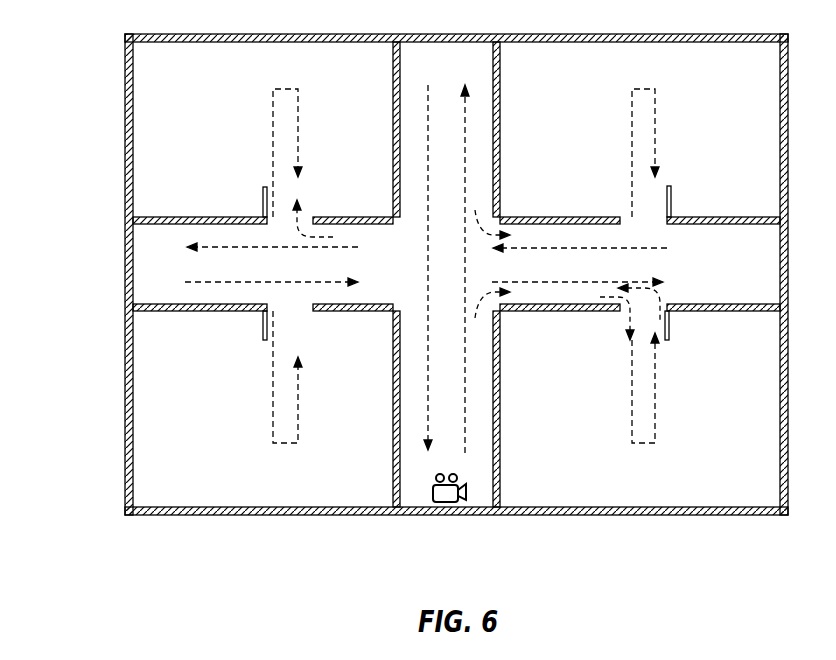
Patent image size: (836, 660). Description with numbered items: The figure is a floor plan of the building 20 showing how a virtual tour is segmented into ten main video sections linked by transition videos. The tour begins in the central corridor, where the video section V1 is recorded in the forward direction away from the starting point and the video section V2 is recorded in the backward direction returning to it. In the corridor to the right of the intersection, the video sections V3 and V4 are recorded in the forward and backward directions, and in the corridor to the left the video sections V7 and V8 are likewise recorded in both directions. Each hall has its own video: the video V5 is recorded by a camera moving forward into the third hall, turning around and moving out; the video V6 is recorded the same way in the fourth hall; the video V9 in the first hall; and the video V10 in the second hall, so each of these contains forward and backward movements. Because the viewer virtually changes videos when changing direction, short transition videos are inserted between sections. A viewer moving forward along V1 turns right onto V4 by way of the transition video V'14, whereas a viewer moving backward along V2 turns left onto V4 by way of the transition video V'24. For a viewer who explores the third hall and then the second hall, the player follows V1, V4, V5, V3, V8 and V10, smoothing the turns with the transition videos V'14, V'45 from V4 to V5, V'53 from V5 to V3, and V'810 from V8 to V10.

The building 20 is at (94, 64).
The video section v1 V1 is at (462, 305).
The video section v2 V2 is at (428, 232).
The video section v3 V3 is at (547, 250).
The video section v4 V4 is at (612, 280).
The video section v5 V5 is at (632, 377).
The video section v6 V6 is at (632, 155).
The video section v7 V7 is at (307, 281).
The video section v8 V8 is at (240, 249).
The video section v9 V9 is at (273, 378).
The video section v10 V10 is at (273, 157).
The transition video v'810 V'810 is at (341, 213).
The transition video v'24 V'24 is at (527, 211).
The transition video v'14 V'14 is at (526, 325).
The transition video v'45 V'45 is at (589, 320).
The transition video v'53 V'53 is at (681, 293).